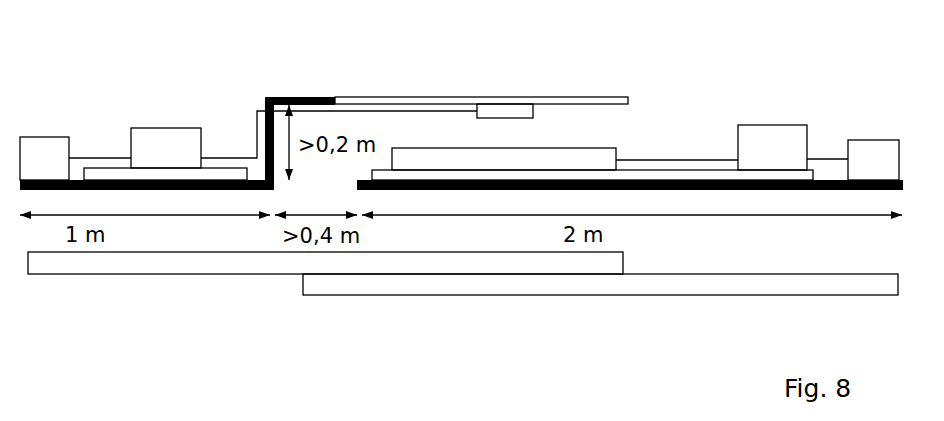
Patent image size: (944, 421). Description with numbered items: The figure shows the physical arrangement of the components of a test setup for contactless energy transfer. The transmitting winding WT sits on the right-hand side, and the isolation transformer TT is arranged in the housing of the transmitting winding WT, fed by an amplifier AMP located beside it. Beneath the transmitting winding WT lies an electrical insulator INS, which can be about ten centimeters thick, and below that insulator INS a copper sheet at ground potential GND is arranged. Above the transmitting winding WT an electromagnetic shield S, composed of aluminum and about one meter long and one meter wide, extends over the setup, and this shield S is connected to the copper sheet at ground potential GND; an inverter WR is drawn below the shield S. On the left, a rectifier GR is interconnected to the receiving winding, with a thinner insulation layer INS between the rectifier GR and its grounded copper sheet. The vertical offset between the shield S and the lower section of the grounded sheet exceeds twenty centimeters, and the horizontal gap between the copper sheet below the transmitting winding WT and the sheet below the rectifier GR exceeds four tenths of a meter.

The rectifier GR is at (153, 128).
The ground potential GND is at (268, 97).
The electromagnetic shield S is at (383, 97).
The inverter WR is at (493, 110).
The transmitting winding WT is at (504, 106).
The isolation transformer TT is at (572, 148).
The amplifier AMP is at (763, 125).
The insulation layer INS is at (150, 170).